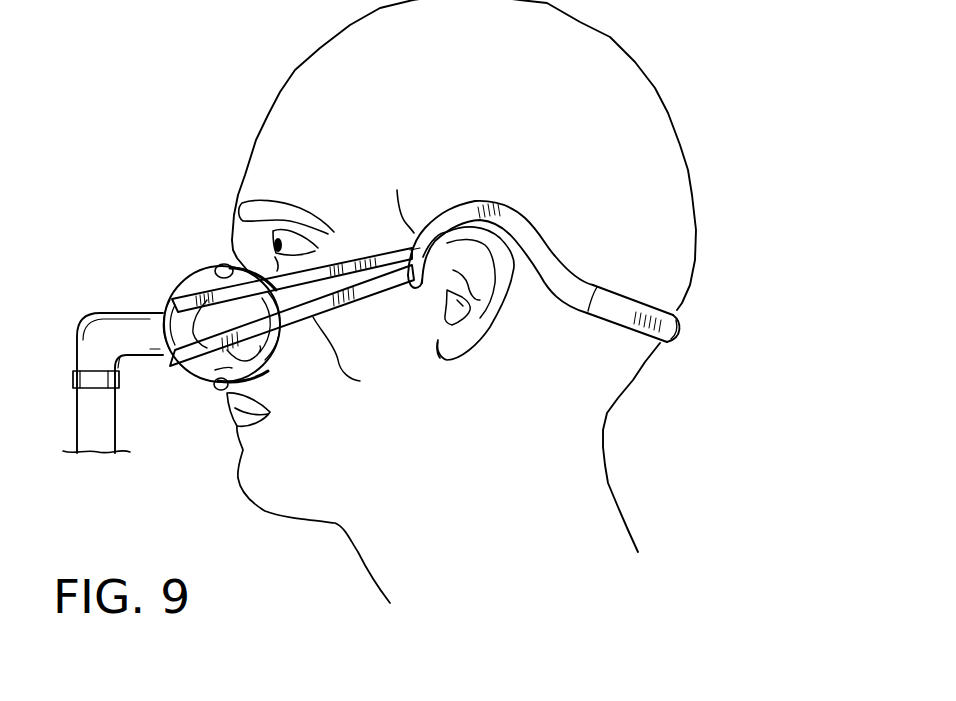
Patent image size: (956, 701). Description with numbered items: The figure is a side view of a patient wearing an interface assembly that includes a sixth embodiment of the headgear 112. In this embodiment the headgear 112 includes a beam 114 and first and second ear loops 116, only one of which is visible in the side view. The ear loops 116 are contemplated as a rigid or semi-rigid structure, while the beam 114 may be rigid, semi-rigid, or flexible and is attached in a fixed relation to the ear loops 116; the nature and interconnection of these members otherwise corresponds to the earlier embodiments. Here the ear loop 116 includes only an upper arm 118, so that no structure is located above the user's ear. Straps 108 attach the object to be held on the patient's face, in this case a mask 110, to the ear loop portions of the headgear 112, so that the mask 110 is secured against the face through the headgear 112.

The straps 108 is at (337, 270).
The mask 110 is at (212, 288).
The headgear 112 is at (695, 100).
The beam 114 is at (680, 332).
The ear loops 116 is at (485, 205).
The upper arm 118 is at (412, 232).